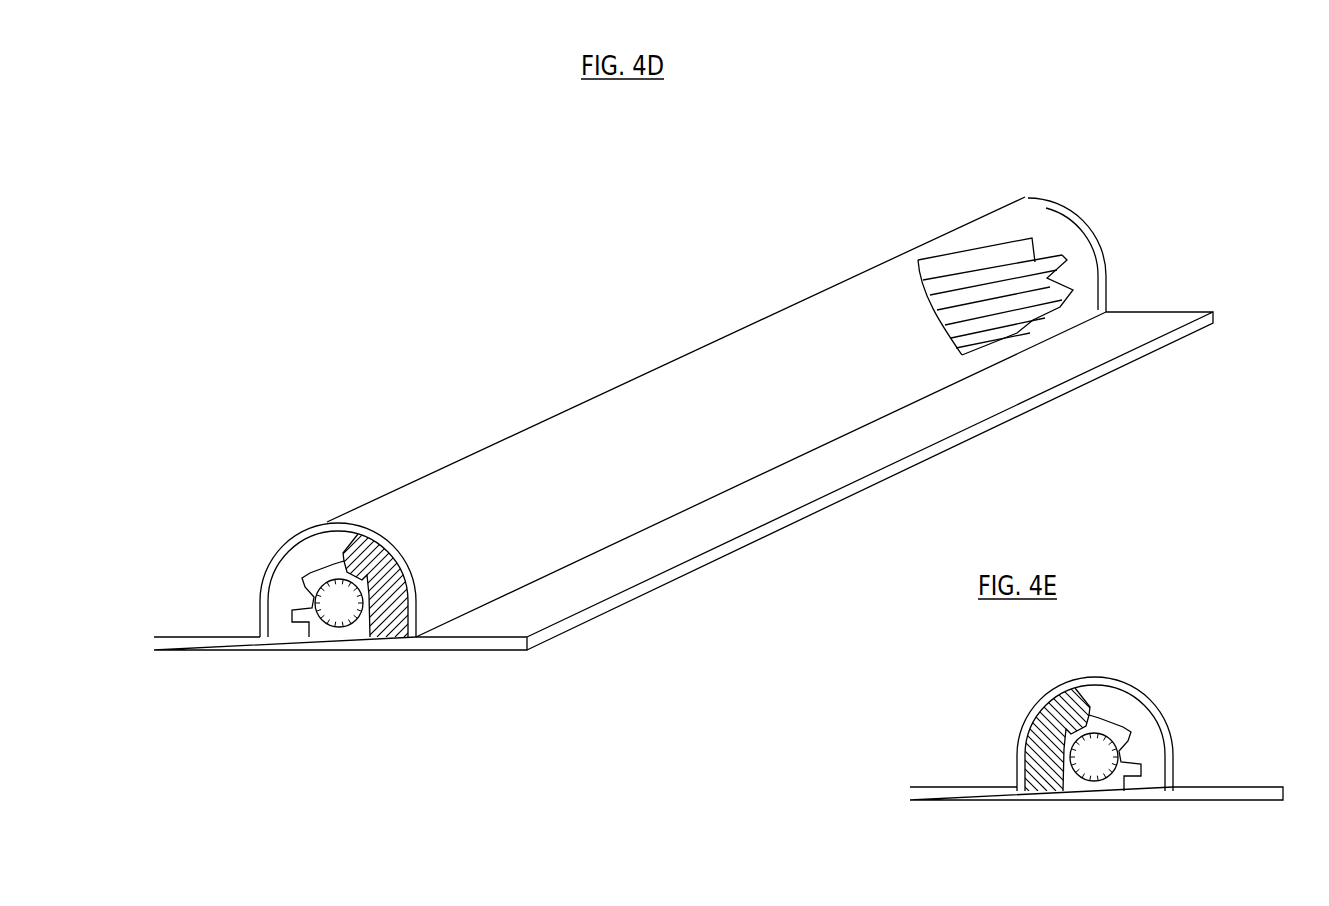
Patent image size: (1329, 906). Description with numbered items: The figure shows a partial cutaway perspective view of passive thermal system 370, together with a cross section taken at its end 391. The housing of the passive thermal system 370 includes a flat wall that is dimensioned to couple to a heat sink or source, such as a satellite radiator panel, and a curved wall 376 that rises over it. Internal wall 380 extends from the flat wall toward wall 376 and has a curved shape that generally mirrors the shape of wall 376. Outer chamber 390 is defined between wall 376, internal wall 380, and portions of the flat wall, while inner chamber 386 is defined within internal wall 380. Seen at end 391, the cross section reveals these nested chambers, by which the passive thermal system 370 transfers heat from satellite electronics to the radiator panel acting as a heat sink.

In FIG. 4D, the passive thermal system 370 is at (613, 325).
In FIG. 4D, the wall 376 is at (515, 430).
In FIG. 4E, the wall 376 is at (1096, 793).
In FIG. 4D, the end 391 is at (1048, 191).
In FIG. 4E, the end 391 is at (1130, 664).
In FIG. 4D, the outer chamber 390 is at (1053, 238).
In FIG. 4E, the outer chamber 390 is at (1122, 708).
In FIG. 4D, the internal wall 380 is at (1083, 267).
In FIG. 4E, the internal wall 380 is at (1075, 713).
In FIG. 4D, the inner chamber 386 is at (342, 603).
In FIG. 4E, the inner chamber 386 is at (1097, 752).